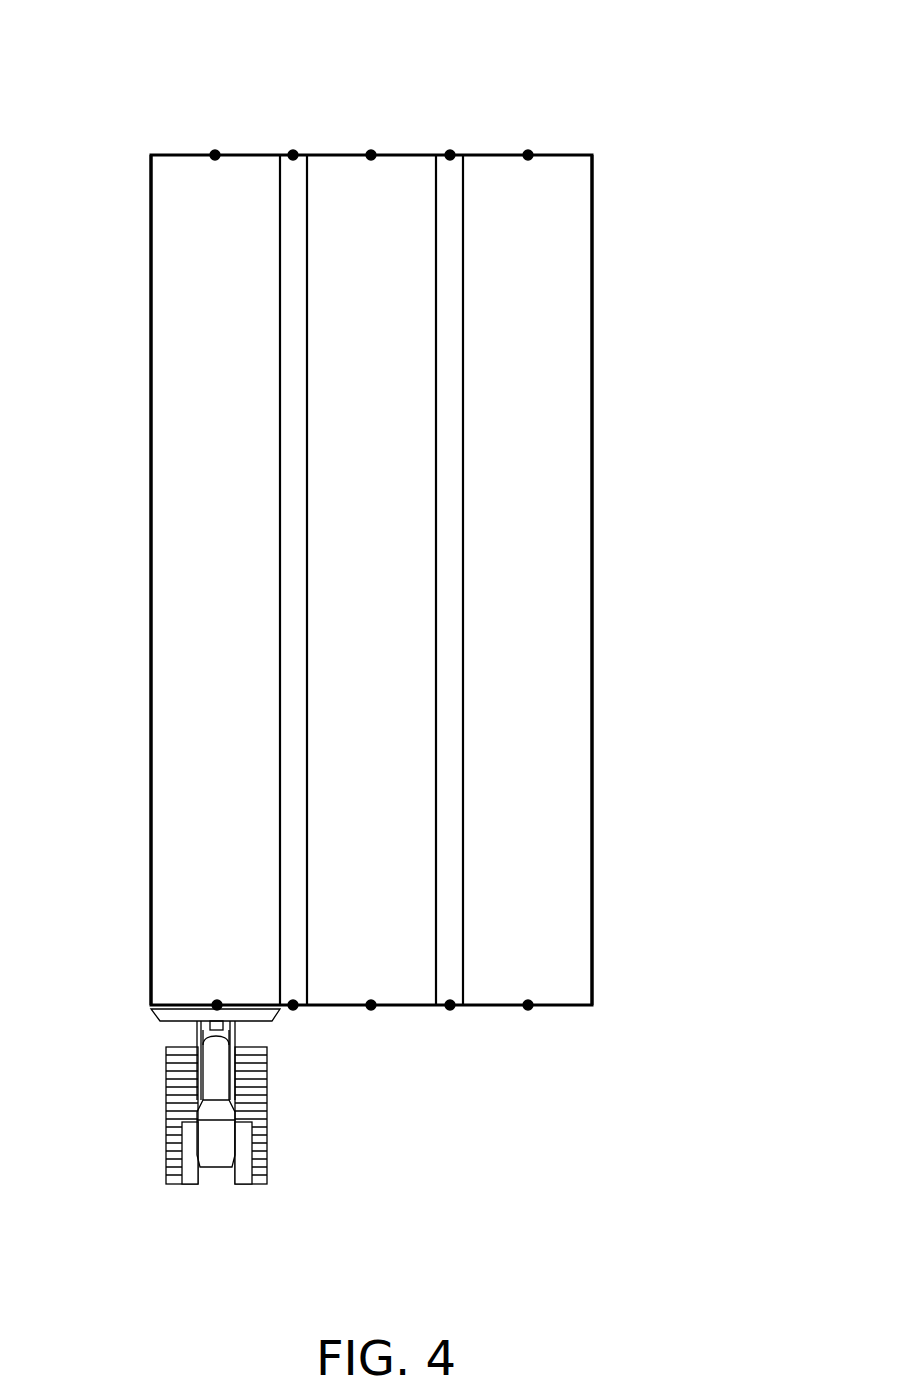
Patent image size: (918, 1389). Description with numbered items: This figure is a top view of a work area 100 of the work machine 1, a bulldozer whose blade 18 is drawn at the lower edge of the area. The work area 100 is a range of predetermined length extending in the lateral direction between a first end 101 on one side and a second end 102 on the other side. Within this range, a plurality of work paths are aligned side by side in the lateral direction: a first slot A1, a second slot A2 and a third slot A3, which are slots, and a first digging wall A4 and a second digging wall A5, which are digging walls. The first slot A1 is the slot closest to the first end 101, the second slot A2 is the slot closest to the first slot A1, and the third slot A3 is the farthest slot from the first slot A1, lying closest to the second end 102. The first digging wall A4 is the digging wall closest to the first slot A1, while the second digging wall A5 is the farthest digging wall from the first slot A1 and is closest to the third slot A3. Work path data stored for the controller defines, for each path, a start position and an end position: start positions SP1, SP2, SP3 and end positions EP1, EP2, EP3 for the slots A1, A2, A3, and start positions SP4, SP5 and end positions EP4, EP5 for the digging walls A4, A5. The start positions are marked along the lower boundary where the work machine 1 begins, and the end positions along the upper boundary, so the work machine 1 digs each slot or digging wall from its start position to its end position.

The work area 100 is at (226, 88).
The first end 101 is at (150, 688).
The second end 102 is at (592, 677).
The first slot A1 is at (215, 337).
The second slot A2 is at (370, 604).
The third slot A3 is at (530, 466).
The first digging wall A4 is at (297, 475).
The second digging wall A5 is at (453, 322).
The end position EP1 is at (215, 158).
The end position EP2 is at (371, 154).
The end position EP3 is at (528, 154).
The end position EP4 is at (293, 154).
The end position EP5 is at (450, 154).
The start position SP1 is at (213, 1000).
The start position SP2 is at (371, 1008).
The start position SP3 is at (528, 1008).
The start position SP4 is at (293, 1008).
The start position SP5 is at (450, 1008).
The blade 18 is at (162, 1015).
The work machine 1 is at (148, 1090).